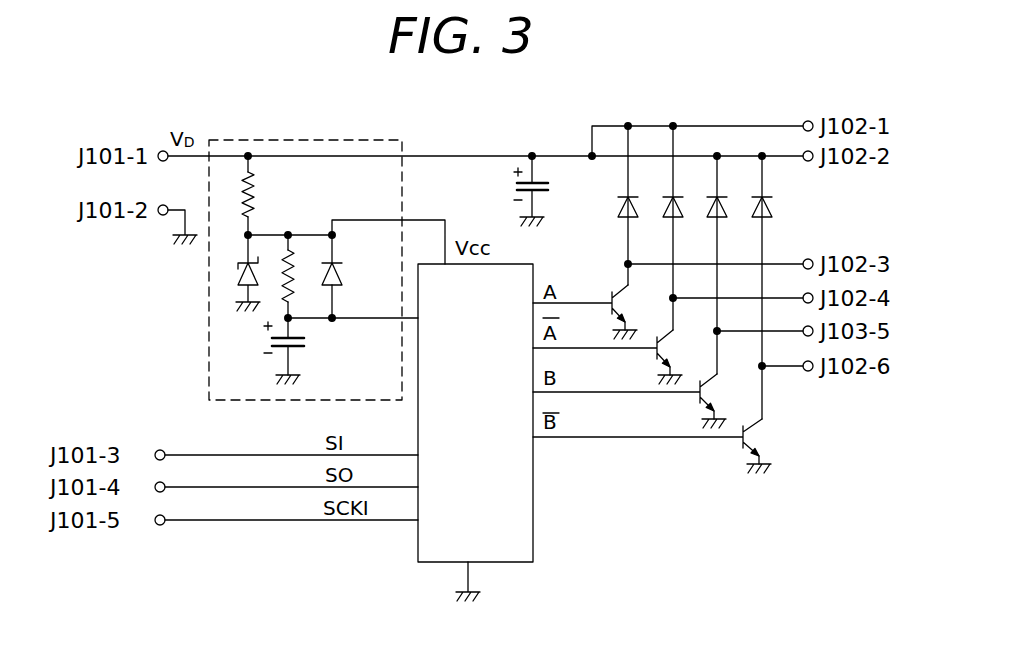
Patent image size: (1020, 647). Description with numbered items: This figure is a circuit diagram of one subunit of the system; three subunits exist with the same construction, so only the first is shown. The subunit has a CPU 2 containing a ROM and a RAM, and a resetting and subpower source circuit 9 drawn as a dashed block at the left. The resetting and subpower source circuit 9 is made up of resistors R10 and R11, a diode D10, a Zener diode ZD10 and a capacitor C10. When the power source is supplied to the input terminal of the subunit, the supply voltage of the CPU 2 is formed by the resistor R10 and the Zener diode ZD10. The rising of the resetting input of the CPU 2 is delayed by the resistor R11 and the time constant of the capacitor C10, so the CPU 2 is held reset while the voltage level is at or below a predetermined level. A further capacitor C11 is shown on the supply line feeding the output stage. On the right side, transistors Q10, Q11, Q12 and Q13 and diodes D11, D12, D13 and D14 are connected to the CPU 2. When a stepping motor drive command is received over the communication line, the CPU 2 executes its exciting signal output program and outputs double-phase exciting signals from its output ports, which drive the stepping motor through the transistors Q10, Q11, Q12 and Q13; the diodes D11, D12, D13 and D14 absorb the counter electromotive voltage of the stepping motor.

The resetting and subpower source circuit 9 is at (363, 137).
The CPU 2 is at (533, 521).
The resistor R10 is at (258, 182).
The resistor R11 is at (296, 262).
The Zener diode ZD10 is at (236, 273).
The diode D10 is at (365, 262).
The capacitor C10 is at (306, 353).
The capacitor C11 is at (555, 191).
The diode D11 is at (620, 207).
The diode D12 is at (663, 207).
The diode D13 is at (707, 207).
The diode D14 is at (752, 207).
The transistor Q10 is at (603, 312).
The transistor Q11 is at (624, 357).
The transistor Q12 is at (646, 401).
The transistor Q13 is at (669, 446).